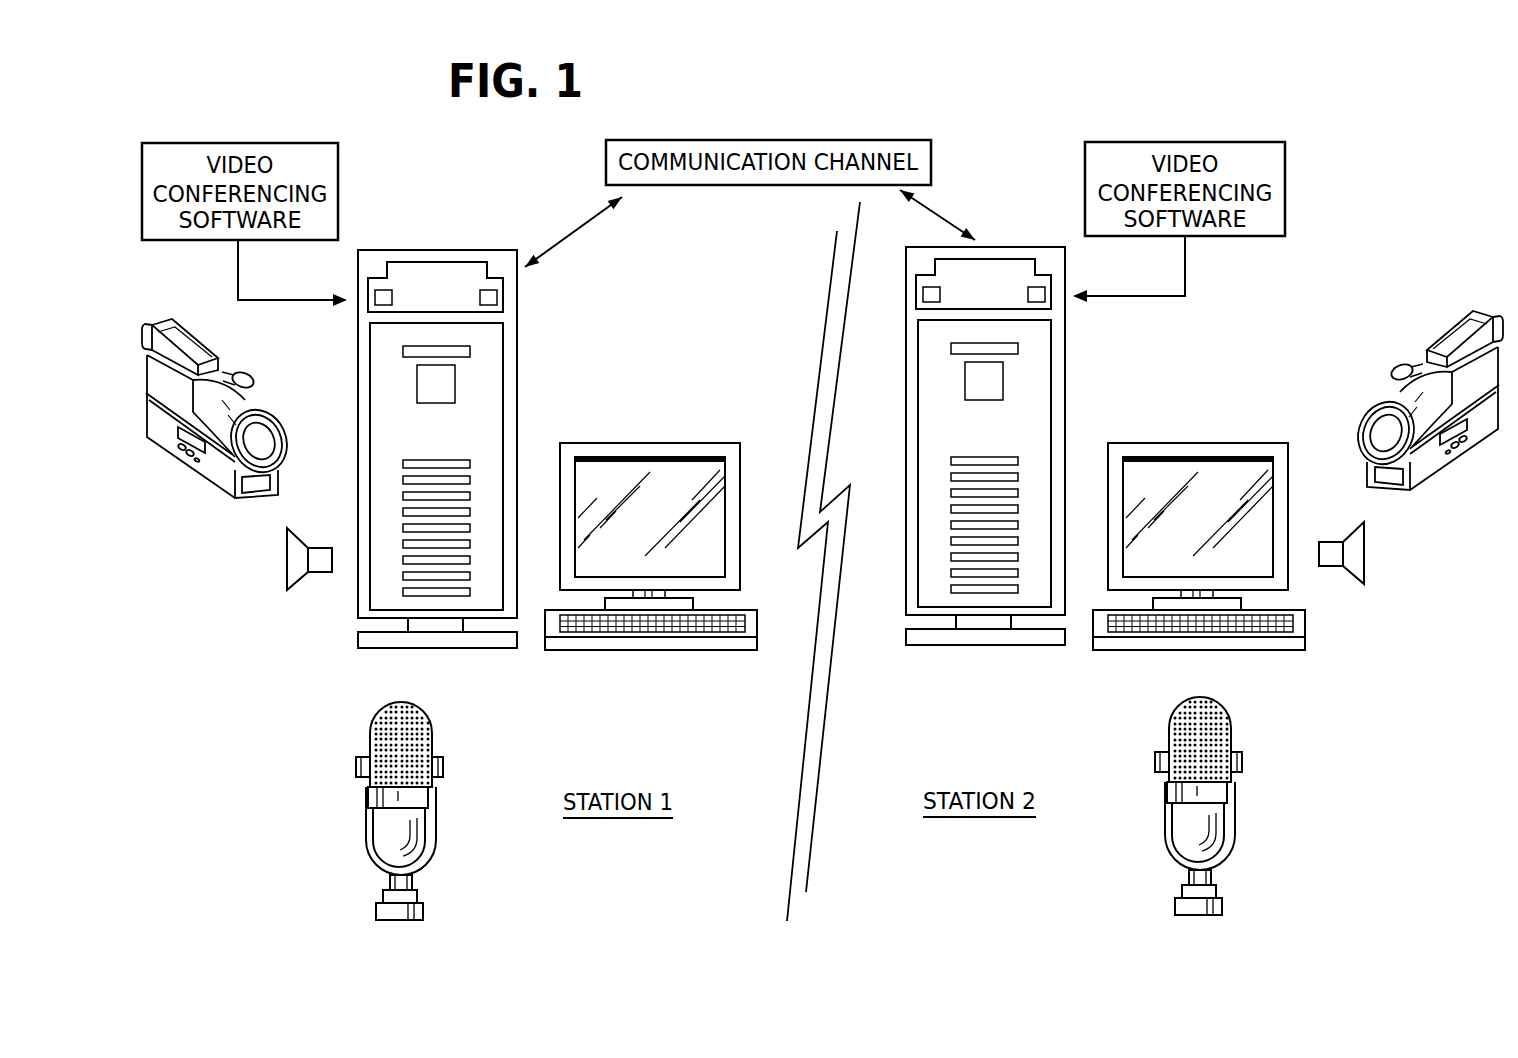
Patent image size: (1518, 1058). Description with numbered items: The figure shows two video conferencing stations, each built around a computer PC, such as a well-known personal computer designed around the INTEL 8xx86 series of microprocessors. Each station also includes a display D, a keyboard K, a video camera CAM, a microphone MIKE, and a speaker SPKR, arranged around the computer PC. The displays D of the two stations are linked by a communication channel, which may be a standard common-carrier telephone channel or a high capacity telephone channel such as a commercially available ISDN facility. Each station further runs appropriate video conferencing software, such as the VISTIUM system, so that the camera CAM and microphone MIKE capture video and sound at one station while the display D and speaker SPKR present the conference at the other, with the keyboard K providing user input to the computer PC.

The computer PC is at (517, 327).
The display D is at (652, 443).
The keyboard K is at (650, 650).
The video camera CAM is at (228, 478).
The speaker SPKR is at (287, 590).
The microphone MIKE is at (381, 831).